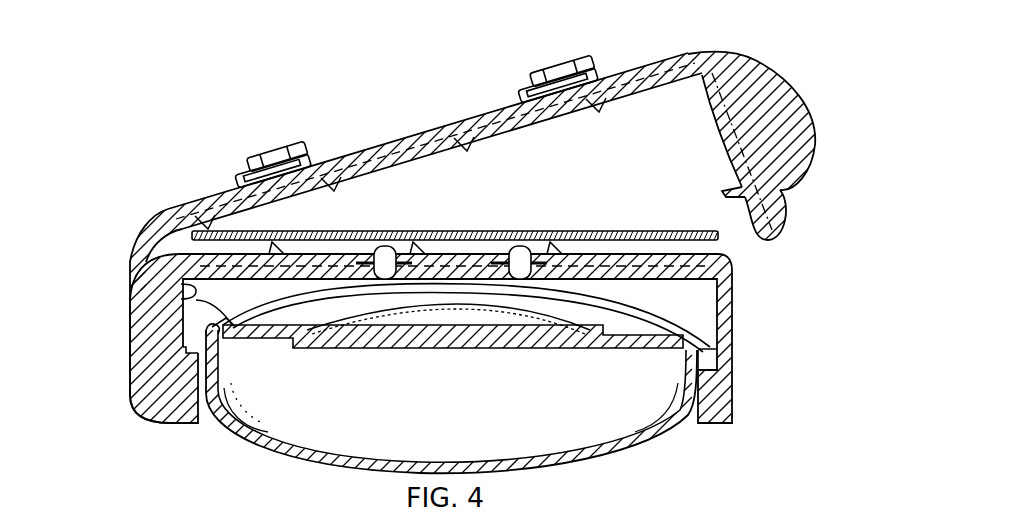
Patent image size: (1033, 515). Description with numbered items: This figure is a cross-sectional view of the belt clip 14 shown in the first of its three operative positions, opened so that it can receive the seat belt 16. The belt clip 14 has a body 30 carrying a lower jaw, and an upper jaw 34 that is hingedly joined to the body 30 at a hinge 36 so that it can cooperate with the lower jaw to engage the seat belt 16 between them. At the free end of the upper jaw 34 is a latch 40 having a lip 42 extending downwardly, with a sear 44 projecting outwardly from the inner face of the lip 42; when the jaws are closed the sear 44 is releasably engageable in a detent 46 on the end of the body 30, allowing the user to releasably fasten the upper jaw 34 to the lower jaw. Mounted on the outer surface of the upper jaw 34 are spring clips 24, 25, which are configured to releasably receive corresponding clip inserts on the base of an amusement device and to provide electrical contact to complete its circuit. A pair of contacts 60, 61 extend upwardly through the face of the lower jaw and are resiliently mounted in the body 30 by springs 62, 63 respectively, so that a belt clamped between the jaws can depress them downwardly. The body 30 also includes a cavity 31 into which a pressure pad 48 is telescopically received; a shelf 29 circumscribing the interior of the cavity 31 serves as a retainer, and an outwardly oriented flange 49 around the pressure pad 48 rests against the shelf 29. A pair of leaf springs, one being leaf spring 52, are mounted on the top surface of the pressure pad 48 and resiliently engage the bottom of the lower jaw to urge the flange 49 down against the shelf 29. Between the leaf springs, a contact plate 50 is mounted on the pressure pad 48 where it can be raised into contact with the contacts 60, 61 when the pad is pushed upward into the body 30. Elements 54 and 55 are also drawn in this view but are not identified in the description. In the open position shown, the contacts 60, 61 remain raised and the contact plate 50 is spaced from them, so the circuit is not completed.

The belt clip 14 is at (771, 278).
The seat belt 16 is at (663, 231).
The spring clip 24 is at (290, 142).
The spring clip 25 is at (592, 62).
The shelf 29 is at (184, 348).
The body 30 is at (128, 378).
The cavity 31 is at (180, 298).
The upper jaw 34 is at (390, 141).
The hinge 36 is at (138, 224).
The latch 40 is at (793, 78).
The lip 42 is at (806, 163).
The sear 44 is at (728, 190).
The detent 46 is at (720, 366).
The pressure pad 48 is at (606, 457).
The flange 49 is at (216, 336).
The contact plate 50 is at (456, 302).
The leaf spring 52 is at (168, 302).
The hooks 54 is at (210, 214).
The seal line 55 is at (462, 130).
The contact 60 is at (384, 246).
The contact 61 is at (518, 248).
The spring 62 is at (404, 261).
The spring 63 is at (543, 256).